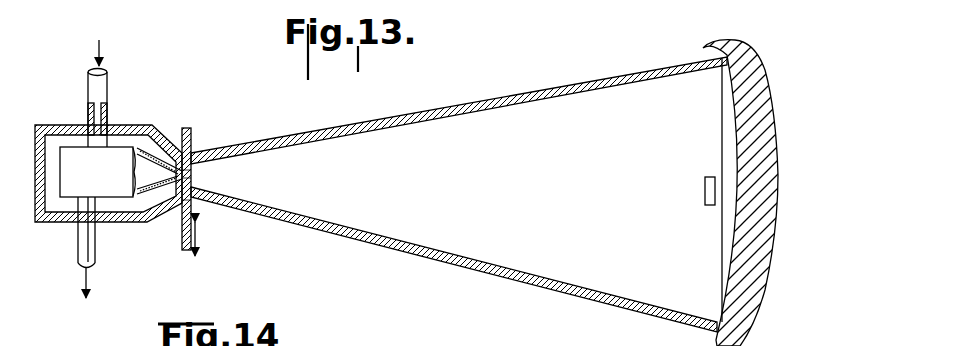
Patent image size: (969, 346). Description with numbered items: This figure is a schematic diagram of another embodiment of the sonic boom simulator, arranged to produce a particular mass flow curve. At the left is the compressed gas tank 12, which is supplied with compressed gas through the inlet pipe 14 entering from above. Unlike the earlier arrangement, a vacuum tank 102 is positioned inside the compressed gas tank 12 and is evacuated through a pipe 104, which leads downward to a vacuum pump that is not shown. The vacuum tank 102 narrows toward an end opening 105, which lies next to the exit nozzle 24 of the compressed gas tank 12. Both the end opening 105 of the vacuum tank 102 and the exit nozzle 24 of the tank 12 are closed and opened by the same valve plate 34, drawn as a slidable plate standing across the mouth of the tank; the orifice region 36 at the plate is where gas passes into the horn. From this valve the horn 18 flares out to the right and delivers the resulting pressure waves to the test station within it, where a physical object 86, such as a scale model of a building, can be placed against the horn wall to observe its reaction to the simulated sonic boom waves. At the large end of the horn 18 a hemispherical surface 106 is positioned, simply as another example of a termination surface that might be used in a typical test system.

The compressed gas tank 12 is at (132, 128).
The inlet pipe 14 is at (91, 88).
The horn 18 is at (510, 93).
The exit nozzle 24 is at (191, 207).
The valve plate 34 is at (182, 230).
The orifice 36 is at (191, 150).
The physical object 86 is at (705, 193).
The vacuum tank 102 is at (97, 172).
The pipe 104 is at (78, 240).
The end opening 105 is at (176, 156).
The hemispherical surface 106 is at (722, 97).